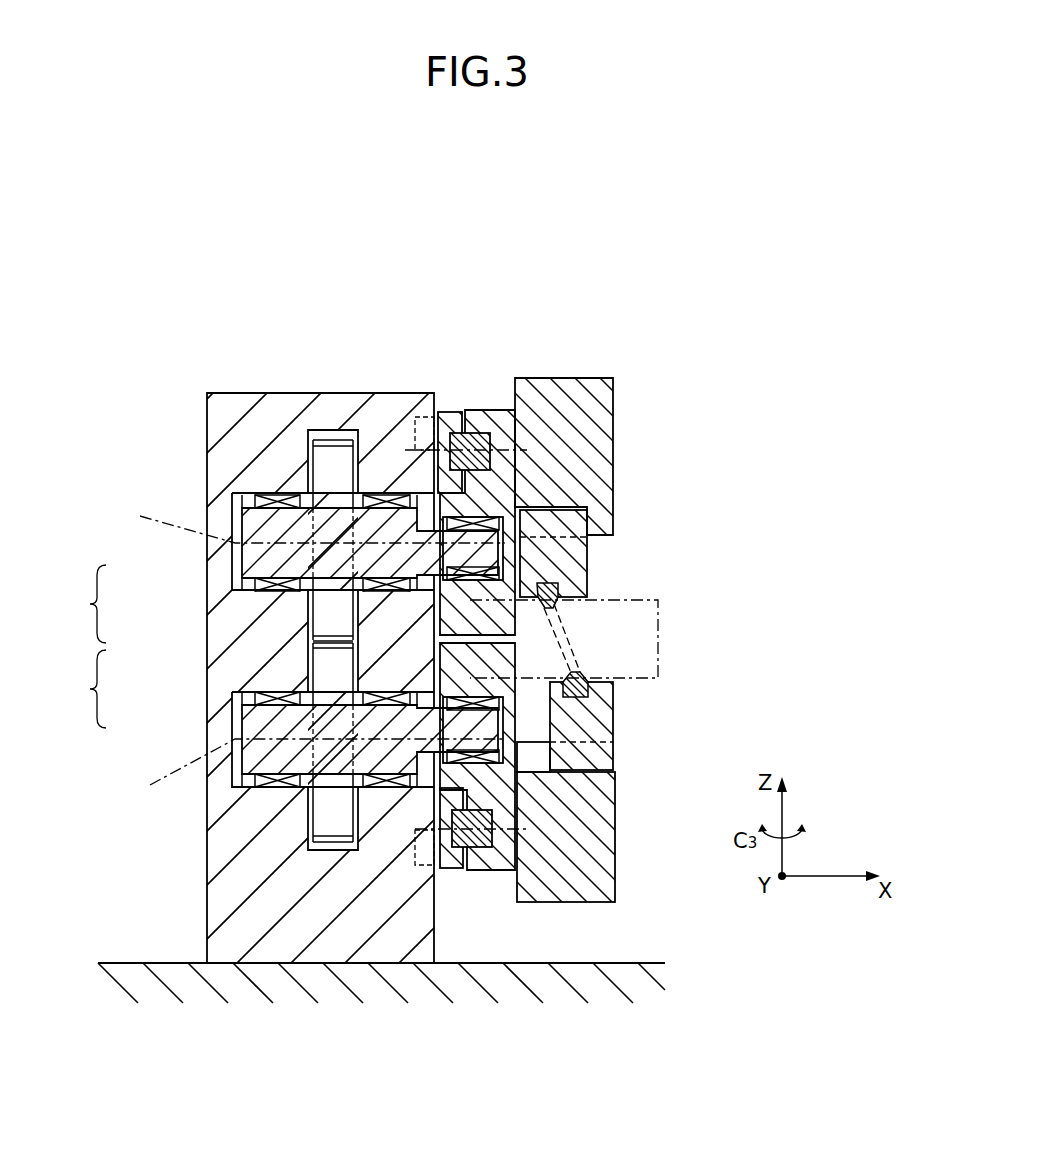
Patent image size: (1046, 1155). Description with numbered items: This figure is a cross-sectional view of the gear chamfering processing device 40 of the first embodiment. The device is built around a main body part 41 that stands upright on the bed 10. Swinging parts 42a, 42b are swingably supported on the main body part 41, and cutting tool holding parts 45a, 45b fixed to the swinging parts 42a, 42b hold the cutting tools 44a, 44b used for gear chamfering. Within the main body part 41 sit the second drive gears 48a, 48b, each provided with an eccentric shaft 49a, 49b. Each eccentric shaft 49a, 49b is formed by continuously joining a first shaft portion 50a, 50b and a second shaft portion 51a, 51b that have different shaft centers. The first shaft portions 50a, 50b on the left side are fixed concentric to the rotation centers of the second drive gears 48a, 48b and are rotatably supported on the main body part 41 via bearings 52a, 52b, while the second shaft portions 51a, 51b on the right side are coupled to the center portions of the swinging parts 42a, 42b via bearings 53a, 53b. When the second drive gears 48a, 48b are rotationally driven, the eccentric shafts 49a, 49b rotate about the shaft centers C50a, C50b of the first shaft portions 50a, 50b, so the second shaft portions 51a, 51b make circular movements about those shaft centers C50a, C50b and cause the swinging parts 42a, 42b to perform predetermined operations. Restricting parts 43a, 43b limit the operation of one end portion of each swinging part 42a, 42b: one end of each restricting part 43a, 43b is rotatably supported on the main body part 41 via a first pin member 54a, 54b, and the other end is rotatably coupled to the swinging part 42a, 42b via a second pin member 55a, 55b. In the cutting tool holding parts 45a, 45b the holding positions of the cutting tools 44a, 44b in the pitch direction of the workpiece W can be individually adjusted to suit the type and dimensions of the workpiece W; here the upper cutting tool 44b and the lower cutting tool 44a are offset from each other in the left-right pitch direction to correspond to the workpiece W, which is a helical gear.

The bed 10 is at (128, 963).
The gear chamfering processing device 40 is at (690, 305).
The main body part 41 is at (222, 393).
The swinging part 42a is at (505, 870).
The swinging part 42b is at (497, 410).
The restricting part 43a is at (462, 870).
The restricting part 43b is at (453, 410).
The cutting tool 44a is at (580, 673).
The cutting tool 44b is at (560, 604).
The cutting tool holding part 45a is at (612, 706).
The cutting tool holding part 45b is at (587, 555).
The second drive gear 48a is at (312, 852).
The second drive gear 48b is at (303, 480).
The eccentric shaft 49a is at (73, 689).
The eccentric shaft 49b is at (73, 604).
The first shaft portion 50a is at (250, 707).
The first shaft portion 50b is at (245, 560).
The second shaft portion 51a is at (312, 662).
The second shaft portion 51b is at (312, 603).
The bearing 52a is at (262, 707).
The bearing 52b is at (250, 493).
The bearing 53a is at (490, 697).
The bearing 53b is at (472, 517).
The first pin member 54a is at (425, 868).
The first pin member 54b is at (422, 440).
The second pin member 55a is at (478, 848).
The second pin member 55b is at (477, 433).
The shaft center C50a is at (299, 765).
The shaft center C50b is at (295, 523).
The workpiece W is at (700, 600).